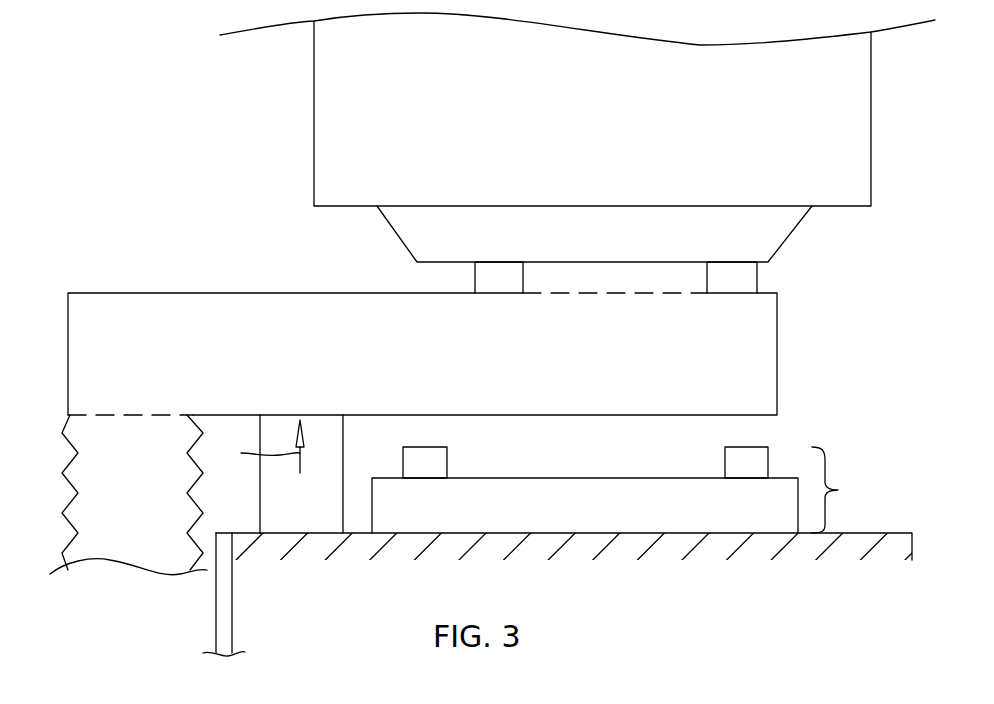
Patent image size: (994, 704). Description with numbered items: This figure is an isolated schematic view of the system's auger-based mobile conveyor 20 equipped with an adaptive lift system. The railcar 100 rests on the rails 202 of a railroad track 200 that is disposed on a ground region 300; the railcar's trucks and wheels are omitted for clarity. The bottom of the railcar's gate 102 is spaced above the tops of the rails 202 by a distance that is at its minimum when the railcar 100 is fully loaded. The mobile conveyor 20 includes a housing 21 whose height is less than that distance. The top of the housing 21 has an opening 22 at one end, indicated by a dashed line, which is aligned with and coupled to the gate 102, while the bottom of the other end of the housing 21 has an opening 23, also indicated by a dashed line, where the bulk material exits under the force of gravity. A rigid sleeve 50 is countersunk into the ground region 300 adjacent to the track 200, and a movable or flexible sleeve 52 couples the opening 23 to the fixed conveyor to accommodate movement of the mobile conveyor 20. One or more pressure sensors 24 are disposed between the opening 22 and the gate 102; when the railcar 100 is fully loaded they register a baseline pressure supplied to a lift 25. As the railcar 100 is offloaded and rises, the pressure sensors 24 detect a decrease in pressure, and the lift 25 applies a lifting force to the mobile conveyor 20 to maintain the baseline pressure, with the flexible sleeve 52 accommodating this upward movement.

The railcar 100 is at (314, 103).
The gate 102 is at (775, 225).
The pressure sensor 24 is at (474, 280).
The mobile conveyor 20 is at (145, 246).
The housing 21 is at (243, 293).
The opening 22 is at (622, 293).
The opening 23 is at (141, 415).
The lift 25 is at (259, 490).
The flexible sleeve 52 is at (63, 520).
The rigid sleeve 50 is at (232, 618).
The railroad track 200 is at (838, 490).
The rails 202 is at (733, 462).
The ground region 300 is at (890, 533).